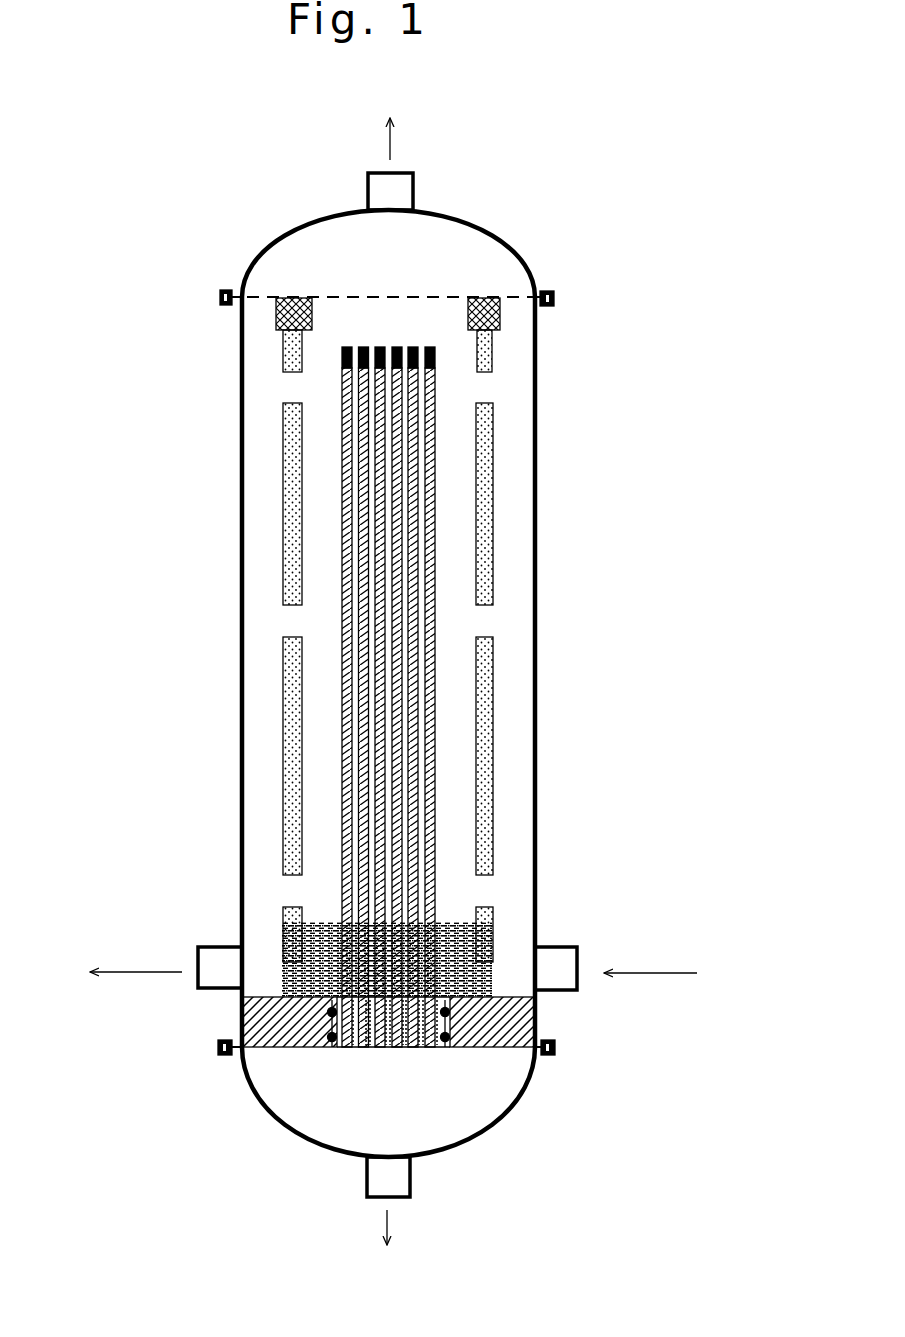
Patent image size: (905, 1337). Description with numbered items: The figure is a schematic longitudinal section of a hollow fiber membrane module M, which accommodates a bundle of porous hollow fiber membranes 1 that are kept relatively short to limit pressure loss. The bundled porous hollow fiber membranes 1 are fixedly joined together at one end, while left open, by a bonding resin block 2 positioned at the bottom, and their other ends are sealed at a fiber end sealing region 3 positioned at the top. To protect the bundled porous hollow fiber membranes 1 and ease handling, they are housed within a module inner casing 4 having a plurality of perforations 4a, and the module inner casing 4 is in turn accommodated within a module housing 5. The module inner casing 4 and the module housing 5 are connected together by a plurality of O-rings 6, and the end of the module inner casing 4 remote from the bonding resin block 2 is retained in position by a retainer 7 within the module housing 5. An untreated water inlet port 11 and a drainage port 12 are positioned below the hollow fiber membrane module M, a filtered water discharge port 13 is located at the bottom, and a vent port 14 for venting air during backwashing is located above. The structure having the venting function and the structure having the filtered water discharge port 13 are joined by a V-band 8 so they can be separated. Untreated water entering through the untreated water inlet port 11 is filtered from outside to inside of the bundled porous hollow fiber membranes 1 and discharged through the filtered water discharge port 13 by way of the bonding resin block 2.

The bundled porous hollow fiber membranes 1 is at (340, 780).
The bonding resin block 2 is at (470, 972).
The fiber end sealing region 3 is at (340, 359).
The module inner casing 4 is at (279, 570).
The perforations 4a is at (484, 606).
The module housing 5 is at (537, 572).
The O-rings 6 is at (444, 1051).
The retainer 7 is at (276, 298).
The V-band 8 is at (562, 297).
The untreated water inlet port 11 is at (560, 947).
The drainage port 12 is at (207, 947).
The filtered water discharge port 13 is at (410, 1185).
The vent port 14 is at (413, 190).
The hollow fiber membrane module M is at (513, 452).